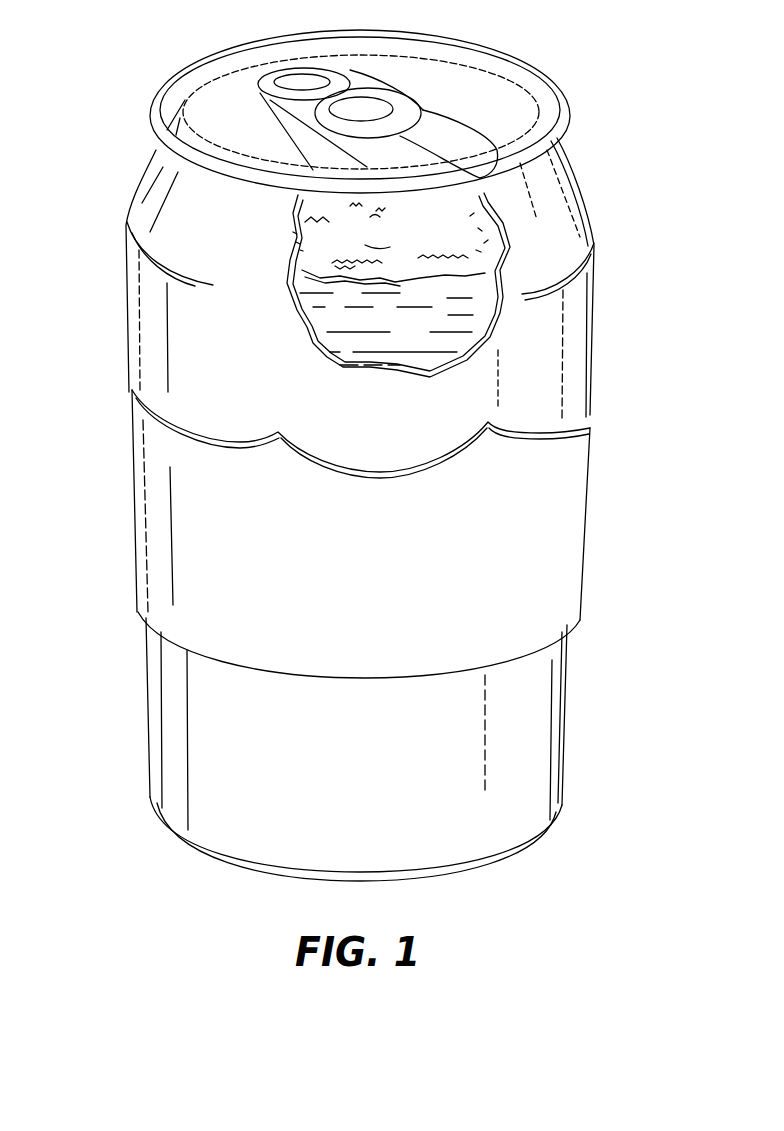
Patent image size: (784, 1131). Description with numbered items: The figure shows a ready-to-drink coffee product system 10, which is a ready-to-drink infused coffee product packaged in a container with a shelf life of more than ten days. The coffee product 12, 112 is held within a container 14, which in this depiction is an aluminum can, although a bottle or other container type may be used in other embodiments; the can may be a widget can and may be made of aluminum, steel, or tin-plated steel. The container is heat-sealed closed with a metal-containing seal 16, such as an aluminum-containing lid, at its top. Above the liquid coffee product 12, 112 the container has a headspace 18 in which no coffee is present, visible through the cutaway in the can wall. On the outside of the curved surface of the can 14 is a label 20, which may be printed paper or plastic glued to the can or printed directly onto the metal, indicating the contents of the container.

The ready-to-drink coffee product system 10 is at (106, 162).
The coffee product 12 is at (498, 318).
The coffee product 112 is at (407, 272).
The container 14 is at (587, 370).
The metal-containing seal 16 is at (476, 80).
The headspace 18 is at (413, 207).
The label 20 is at (213, 552).